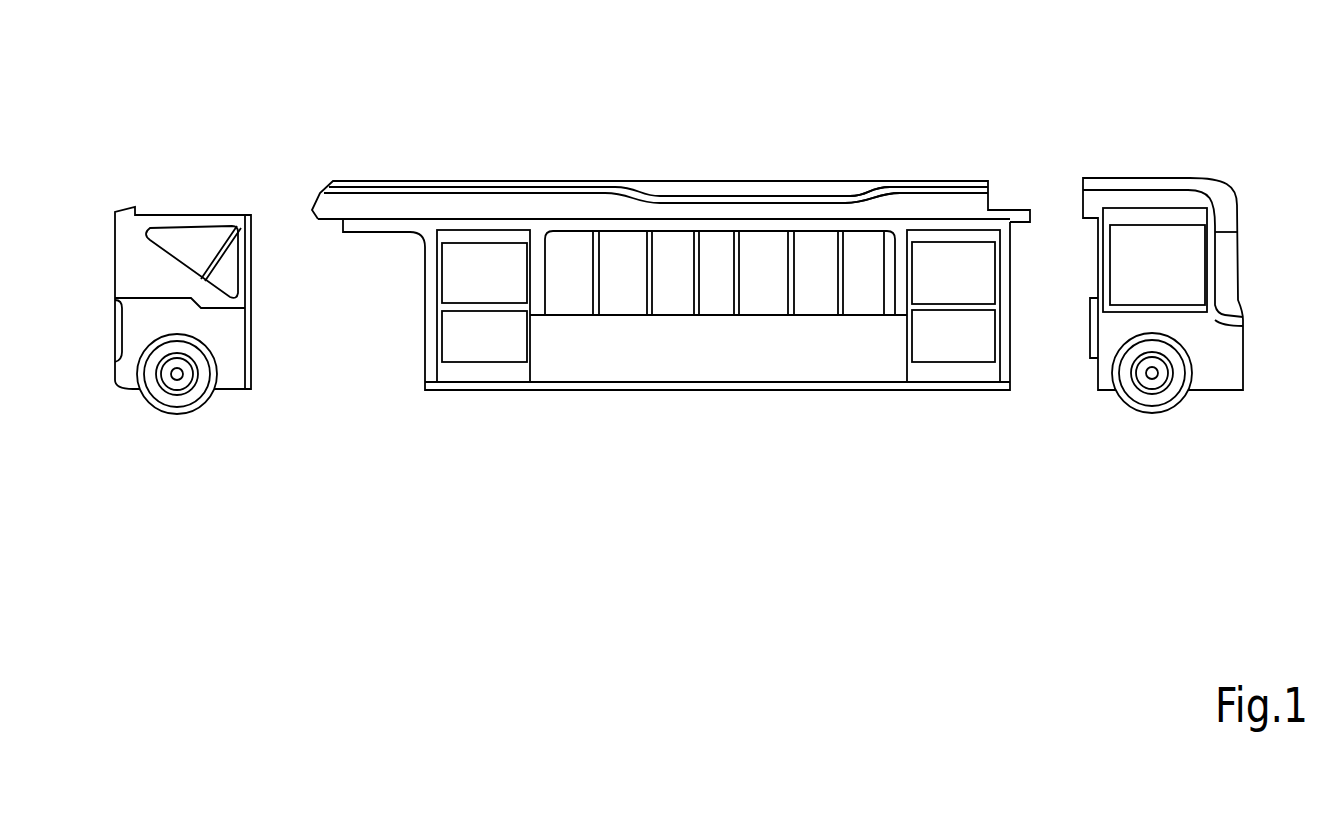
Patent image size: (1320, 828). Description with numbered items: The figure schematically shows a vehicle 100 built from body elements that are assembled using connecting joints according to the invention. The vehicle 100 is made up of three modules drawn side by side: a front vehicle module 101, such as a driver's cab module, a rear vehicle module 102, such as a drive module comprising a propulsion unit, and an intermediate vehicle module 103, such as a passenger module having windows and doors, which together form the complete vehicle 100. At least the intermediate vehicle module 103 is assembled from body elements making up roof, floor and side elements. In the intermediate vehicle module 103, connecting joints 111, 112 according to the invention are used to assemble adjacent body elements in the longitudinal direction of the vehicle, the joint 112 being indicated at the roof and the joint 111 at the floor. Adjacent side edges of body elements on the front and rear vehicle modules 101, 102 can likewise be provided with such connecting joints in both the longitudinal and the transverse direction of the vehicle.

The vehicle 100 is at (670, 252).
The front vehicle module 101 is at (1162, 172).
The rear vehicle module 102 is at (172, 208).
The intermediate vehicle module 103 is at (642, 177).
The connecting joint 111 is at (680, 390).
The connecting joint 112 is at (872, 182).